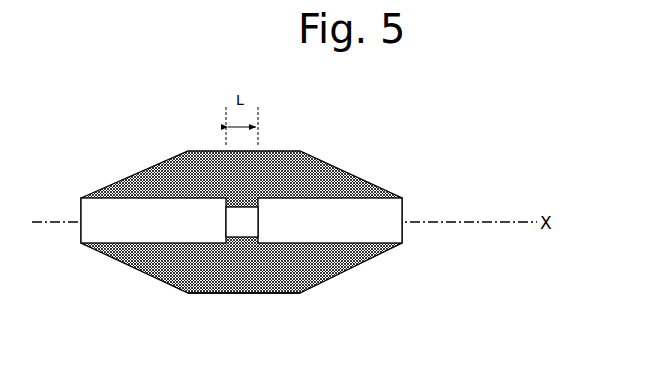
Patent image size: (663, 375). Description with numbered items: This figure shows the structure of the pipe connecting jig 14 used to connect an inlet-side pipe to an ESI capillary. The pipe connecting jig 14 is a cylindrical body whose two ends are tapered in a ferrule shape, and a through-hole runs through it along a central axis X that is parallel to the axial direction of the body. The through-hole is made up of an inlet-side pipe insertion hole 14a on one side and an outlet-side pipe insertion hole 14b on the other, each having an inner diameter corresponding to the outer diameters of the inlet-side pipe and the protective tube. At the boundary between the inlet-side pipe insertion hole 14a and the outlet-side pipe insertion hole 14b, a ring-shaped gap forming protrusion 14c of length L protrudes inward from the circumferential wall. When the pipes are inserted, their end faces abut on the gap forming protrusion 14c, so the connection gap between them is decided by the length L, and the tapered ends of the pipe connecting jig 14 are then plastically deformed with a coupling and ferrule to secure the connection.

The pipe connecting jig 14 is at (244, 241).
The inlet-side pipe insertion hole 14a is at (96, 234).
The outlet-side pipe insertion hole 14b is at (392, 233).
The gap forming protrusion 14c is at (275, 293).